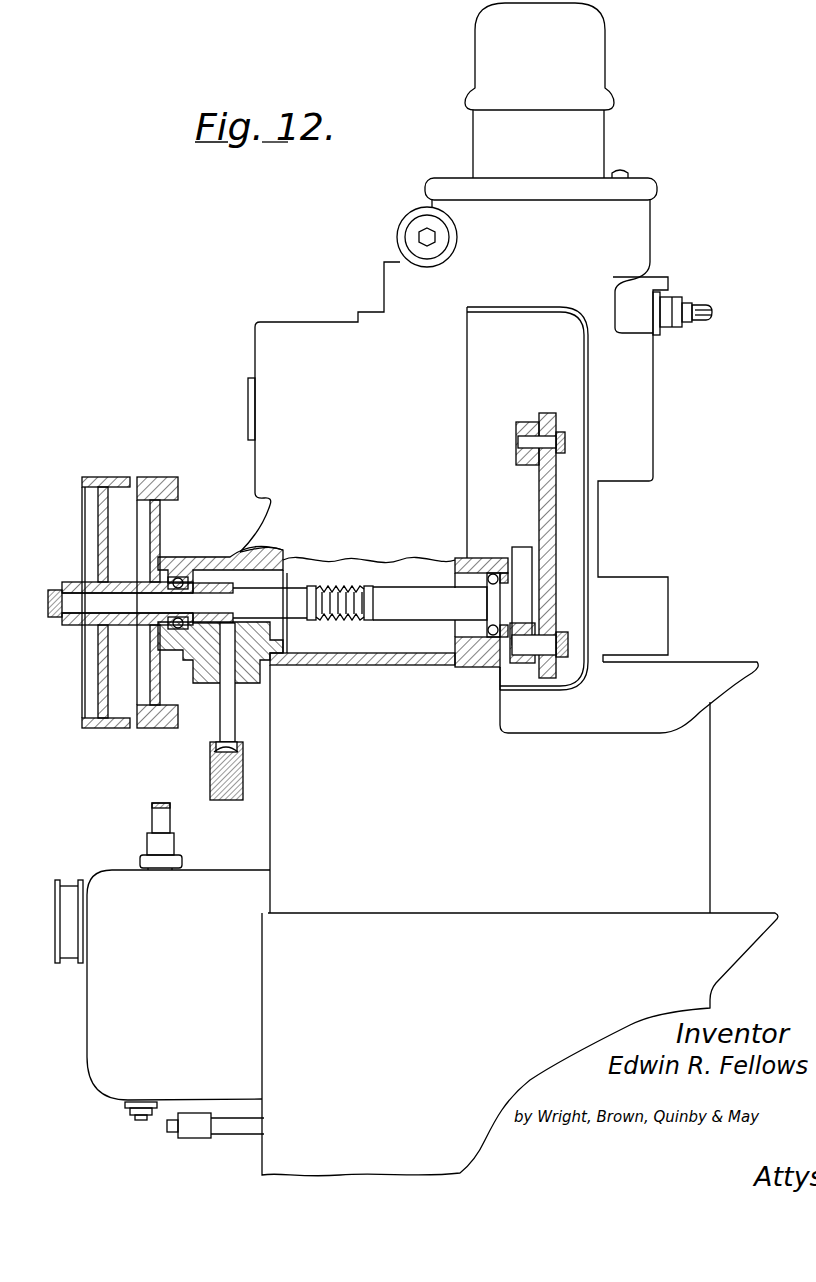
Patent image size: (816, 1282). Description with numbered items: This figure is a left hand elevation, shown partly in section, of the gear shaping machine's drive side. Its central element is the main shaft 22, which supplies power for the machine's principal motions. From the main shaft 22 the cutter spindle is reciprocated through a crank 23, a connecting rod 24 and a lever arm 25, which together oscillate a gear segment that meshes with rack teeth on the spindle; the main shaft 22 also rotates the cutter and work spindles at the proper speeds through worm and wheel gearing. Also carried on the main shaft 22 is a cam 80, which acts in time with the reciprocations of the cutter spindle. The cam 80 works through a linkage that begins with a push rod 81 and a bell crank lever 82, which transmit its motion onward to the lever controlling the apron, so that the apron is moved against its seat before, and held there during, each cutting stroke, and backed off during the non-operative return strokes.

The main shaft 22 is at (391, 600).
The crank 23 is at (522, 648).
The connecting rod 24 is at (547, 527).
The lever arm 25 is at (528, 422).
The cam 80 is at (232, 585).
The push rod 81 is at (225, 705).
The bell crank lever 82 is at (210, 776).